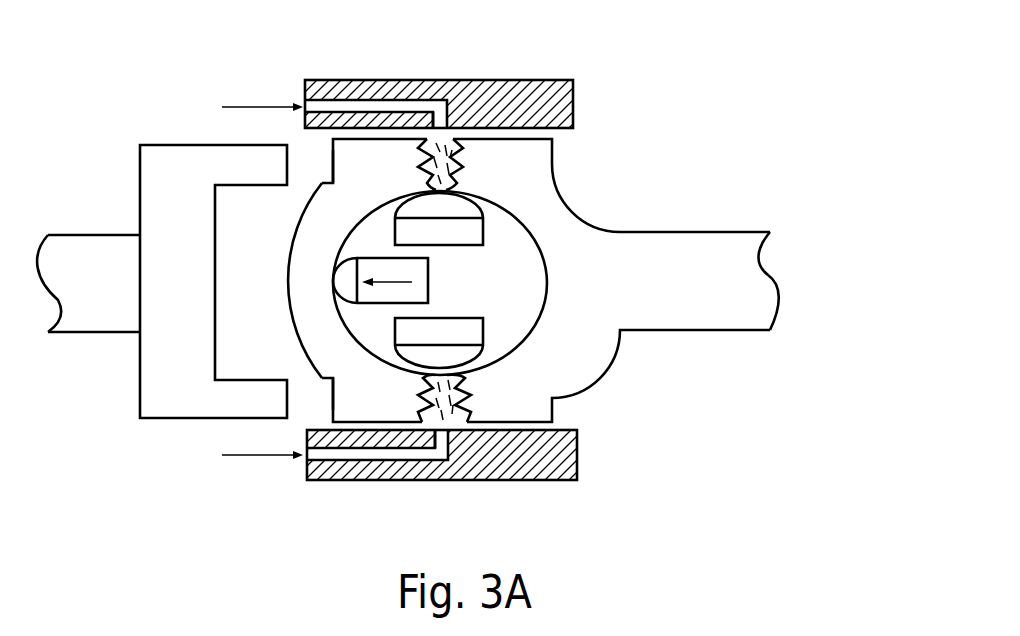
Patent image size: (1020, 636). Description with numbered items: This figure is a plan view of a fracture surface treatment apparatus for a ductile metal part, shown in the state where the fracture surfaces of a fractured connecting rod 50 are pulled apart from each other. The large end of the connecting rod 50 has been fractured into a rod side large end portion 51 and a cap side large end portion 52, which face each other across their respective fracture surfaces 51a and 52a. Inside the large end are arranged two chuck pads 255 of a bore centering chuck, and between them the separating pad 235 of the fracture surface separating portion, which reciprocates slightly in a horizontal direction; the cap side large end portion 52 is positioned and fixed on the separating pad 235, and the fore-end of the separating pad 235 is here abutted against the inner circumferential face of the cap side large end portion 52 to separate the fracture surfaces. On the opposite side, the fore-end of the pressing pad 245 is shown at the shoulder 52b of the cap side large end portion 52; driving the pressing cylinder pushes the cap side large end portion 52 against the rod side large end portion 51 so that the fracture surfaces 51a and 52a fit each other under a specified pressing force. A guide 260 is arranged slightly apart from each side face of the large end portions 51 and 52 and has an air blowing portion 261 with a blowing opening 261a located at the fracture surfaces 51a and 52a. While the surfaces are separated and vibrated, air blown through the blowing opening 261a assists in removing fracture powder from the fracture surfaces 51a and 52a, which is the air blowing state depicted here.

The fractured connecting rod 50 is at (482, 270).
The rod side large end portion 51 is at (543, 362).
The fracture surface 51a is at (463, 175).
The cap side large end portion 52 is at (293, 233).
The fracture surface 52a is at (423, 160).
The shoulder 52b is at (333, 158).
The separating pad 235 is at (428, 282).
The pressing pad 245 is at (140, 379).
The chuck pad 255 is at (483, 237).
The guide 260 is at (540, 90).
The air blowing portion 261 is at (412, 103).
The blowing opening 261a is at (447, 118).